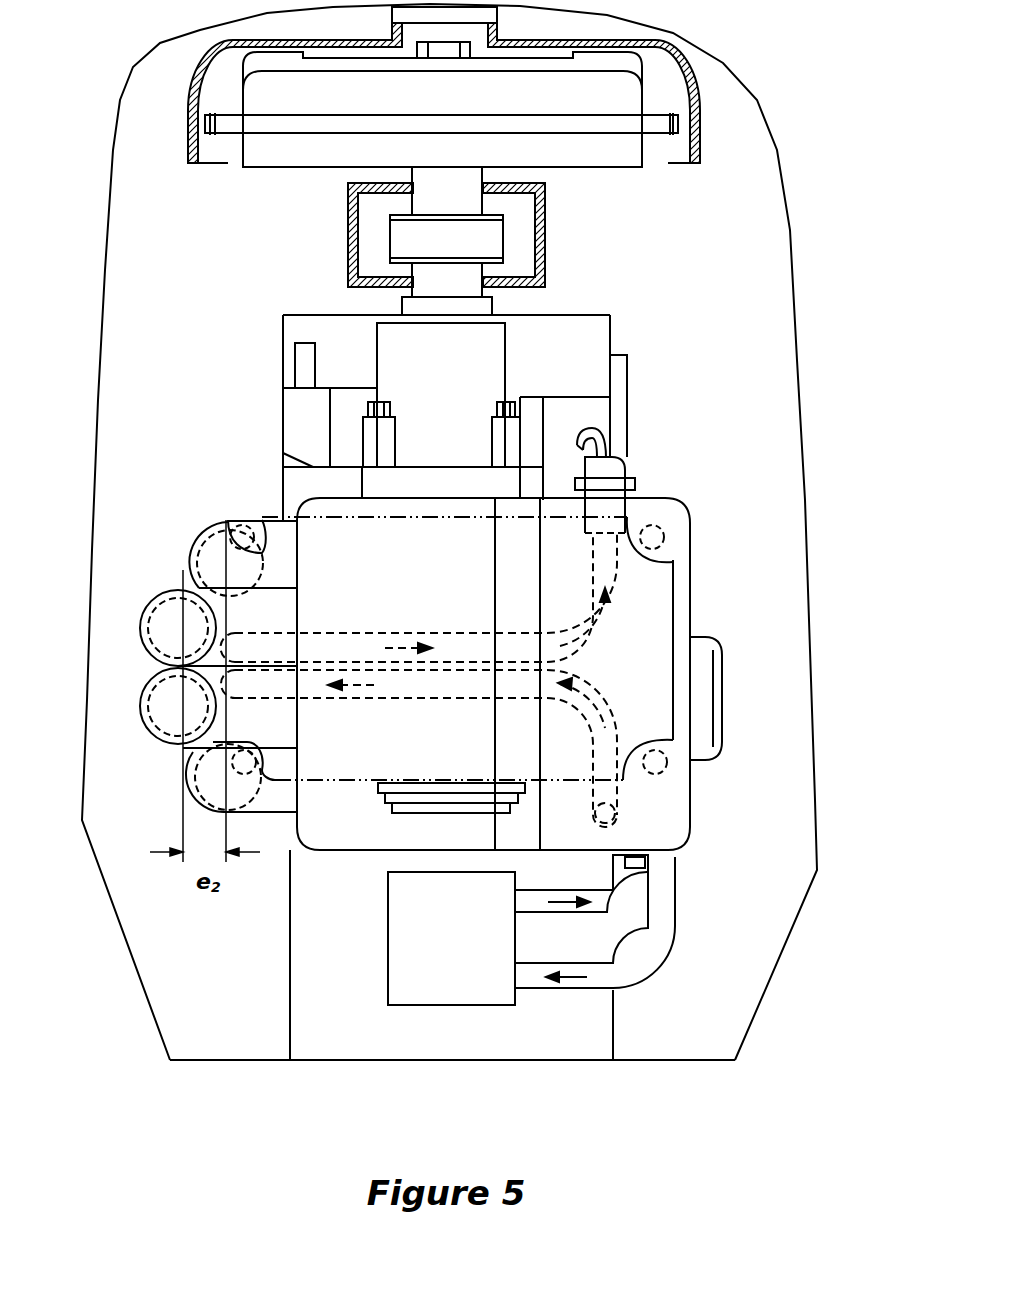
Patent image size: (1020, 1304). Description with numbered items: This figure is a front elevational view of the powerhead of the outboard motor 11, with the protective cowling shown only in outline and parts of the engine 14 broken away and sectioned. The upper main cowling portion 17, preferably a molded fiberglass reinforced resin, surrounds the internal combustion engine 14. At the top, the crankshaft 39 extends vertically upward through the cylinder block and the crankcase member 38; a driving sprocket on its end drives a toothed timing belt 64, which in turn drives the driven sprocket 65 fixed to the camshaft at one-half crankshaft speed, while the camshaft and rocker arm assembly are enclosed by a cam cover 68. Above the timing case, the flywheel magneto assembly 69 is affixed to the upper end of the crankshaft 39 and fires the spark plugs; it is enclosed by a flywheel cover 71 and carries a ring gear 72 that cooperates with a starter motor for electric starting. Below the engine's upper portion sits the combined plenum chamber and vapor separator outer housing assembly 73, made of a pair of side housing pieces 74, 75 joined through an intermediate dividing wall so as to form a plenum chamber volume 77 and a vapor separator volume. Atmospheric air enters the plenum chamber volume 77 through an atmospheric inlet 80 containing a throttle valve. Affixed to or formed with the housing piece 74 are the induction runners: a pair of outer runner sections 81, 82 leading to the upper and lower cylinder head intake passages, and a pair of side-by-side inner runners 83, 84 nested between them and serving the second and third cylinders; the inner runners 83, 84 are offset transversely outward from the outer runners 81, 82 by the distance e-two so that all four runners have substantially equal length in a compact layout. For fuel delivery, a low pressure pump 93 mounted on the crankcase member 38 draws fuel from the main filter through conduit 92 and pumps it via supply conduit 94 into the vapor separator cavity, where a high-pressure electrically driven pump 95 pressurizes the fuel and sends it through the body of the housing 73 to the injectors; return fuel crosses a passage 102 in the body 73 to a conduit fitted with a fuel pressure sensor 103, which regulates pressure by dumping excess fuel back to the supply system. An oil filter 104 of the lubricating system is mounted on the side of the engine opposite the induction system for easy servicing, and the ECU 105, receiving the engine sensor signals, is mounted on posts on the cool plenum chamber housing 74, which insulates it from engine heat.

The outboard motor 11 is at (786, 62).
The upper main cowling portion 17 is at (795, 330).
The flywheel cover 71 is at (700, 135).
The ring gear 72 is at (207, 133).
The flywheel magneto assembly 69 is at (617, 158).
The crankshaft 39 is at (468, 197).
The internal combustion engine 14 is at (652, 258).
The driven sprocket 65 is at (507, 243).
The toothed timing belt 64 is at (445, 275).
The atmospheric inlet 80 is at (495, 370).
The cam cover 68 is at (627, 413).
The fuel pressure sensor 103 is at (615, 468).
The plenum chamber and vapor separator outer housing assembly 73 is at (703, 513).
The side housing piece 75 is at (677, 815).
The side housing piece 74 is at (350, 838).
The ECU 105 is at (675, 615).
The oil filter 104 is at (722, 693).
The plenum chamber volume 77 is at (215, 505).
The outer runner section 81 is at (192, 538).
The outer runner section 82 is at (190, 778).
The inner runner 83 is at (150, 596).
The inner runner 84 is at (143, 710).
The passage 102 is at (400, 632).
The high-pressure electrically driven pump 95 is at (443, 700).
The crankcase member 38 is at (288, 920).
The low pressure pump 93 is at (388, 978).
The supply conduit 94 is at (535, 912).
The conduit 92 is at (637, 988).